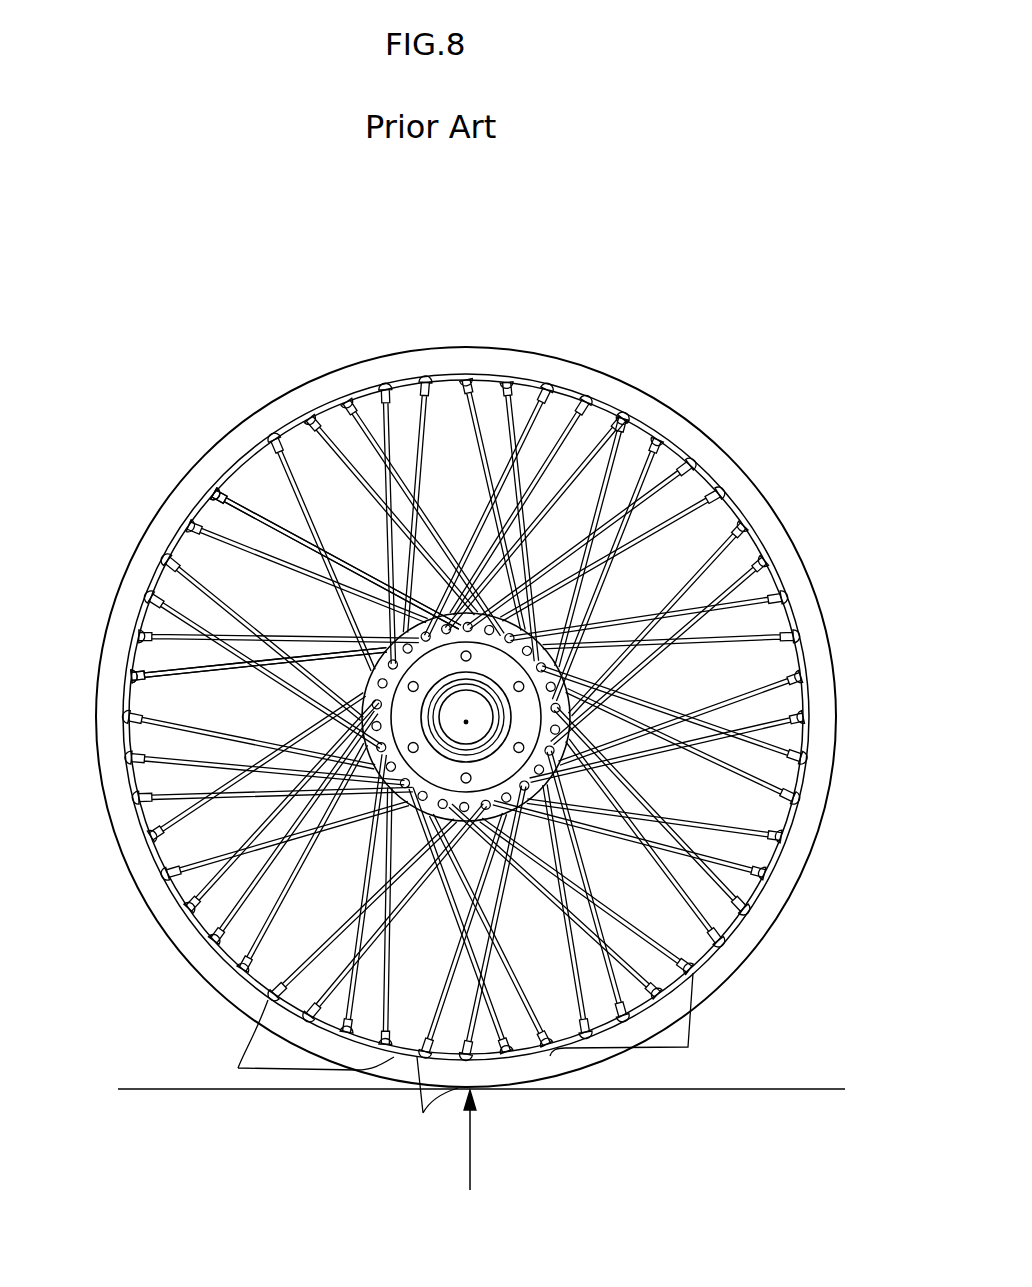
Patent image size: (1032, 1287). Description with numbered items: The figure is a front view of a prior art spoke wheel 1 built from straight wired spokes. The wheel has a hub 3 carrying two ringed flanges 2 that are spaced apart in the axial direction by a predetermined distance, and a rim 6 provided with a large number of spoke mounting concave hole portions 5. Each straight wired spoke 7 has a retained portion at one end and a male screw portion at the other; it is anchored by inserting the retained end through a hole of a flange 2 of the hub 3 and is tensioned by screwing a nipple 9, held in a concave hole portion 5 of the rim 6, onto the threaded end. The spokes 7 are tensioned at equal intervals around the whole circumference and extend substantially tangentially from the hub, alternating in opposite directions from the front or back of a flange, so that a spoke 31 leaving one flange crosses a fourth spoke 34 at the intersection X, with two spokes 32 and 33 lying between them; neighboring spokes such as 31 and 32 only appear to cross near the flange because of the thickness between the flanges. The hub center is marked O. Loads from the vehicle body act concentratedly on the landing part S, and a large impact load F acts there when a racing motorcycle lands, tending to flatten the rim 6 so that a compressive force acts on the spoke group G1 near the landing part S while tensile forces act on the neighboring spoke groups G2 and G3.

The spoke wheel 1 is at (486, 312).
The flange 2 is at (588, 615).
The hub 3 is at (573, 666).
The spoke 31 is at (290, 688).
The second spoke 32 is at (305, 817).
The third spoke 33 is at (315, 593).
The fourth spoke 34 is at (296, 748).
The spoke mounting concave hole portion 5 is at (683, 472).
The rim 6 is at (778, 513).
The straight wired spoke 7 is at (600, 466).
The nipple 9 is at (577, 462).
The hub center O is at (479, 717).
The intersection X is at (318, 699).
The spoke group G1 is at (434, 1100).
The spoke group G2 is at (631, 1023).
The spoke group G3 is at (300, 1042).
The landing part S is at (487, 1088).
The impact load F is at (470, 1158).